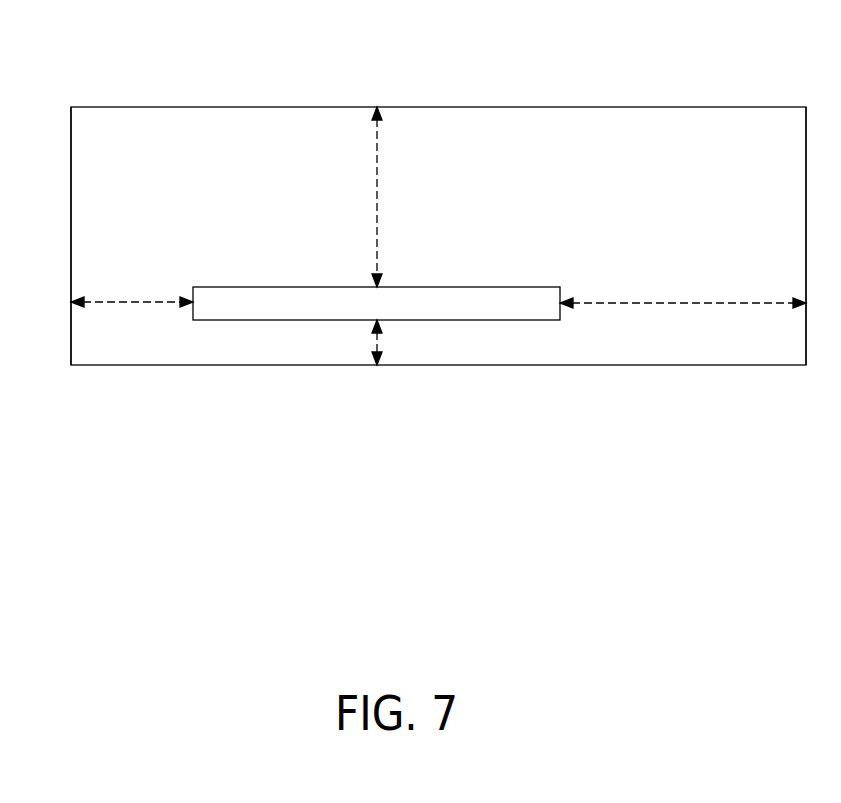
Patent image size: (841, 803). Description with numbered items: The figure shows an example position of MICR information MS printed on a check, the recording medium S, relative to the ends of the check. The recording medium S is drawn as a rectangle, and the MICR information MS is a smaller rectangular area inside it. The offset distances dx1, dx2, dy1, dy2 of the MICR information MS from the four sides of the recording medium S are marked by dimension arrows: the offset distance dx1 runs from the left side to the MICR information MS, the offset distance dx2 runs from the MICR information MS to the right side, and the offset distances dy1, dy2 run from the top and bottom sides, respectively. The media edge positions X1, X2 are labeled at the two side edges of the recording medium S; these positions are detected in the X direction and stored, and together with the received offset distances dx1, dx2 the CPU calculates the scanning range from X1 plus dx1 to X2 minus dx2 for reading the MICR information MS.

The recording medium S is at (451, 107).
The MICR information MS is at (528, 320).
The media edge position X1 is at (63, 217).
The media edge position X2 is at (806, 217).
The offset distance dx1 is at (132, 291).
The offset distance dx2 is at (683, 292).
The offset distance dy1 is at (399, 197).
The offset distance dy2 is at (400, 342).